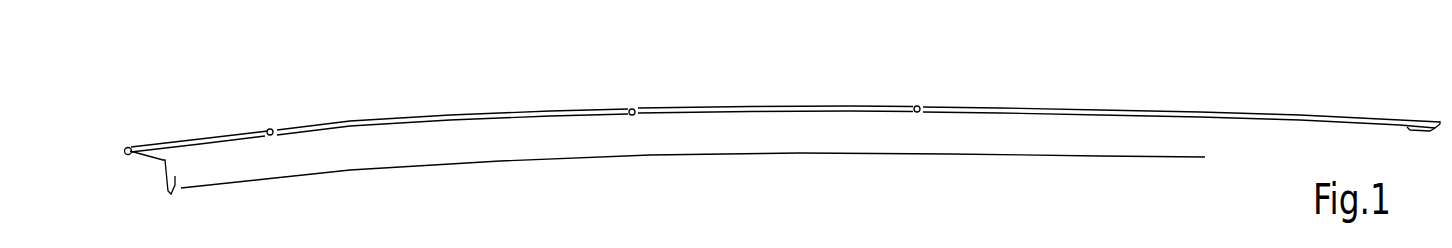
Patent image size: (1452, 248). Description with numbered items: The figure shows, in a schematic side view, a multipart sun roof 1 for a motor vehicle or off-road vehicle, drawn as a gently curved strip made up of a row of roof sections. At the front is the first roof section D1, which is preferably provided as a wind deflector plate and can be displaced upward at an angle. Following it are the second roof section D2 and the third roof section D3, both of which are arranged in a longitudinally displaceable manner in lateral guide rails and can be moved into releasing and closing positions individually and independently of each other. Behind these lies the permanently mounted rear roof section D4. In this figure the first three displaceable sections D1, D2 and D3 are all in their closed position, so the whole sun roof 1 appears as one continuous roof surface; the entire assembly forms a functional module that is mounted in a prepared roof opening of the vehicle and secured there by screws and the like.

The multipart sun roof 1 is at (783, 119).
The first roof section D1 is at (198, 140).
The second roof section D2 is at (477, 115).
The third roof section D3 is at (800, 107).
The rear roof section D4 is at (1166, 111).